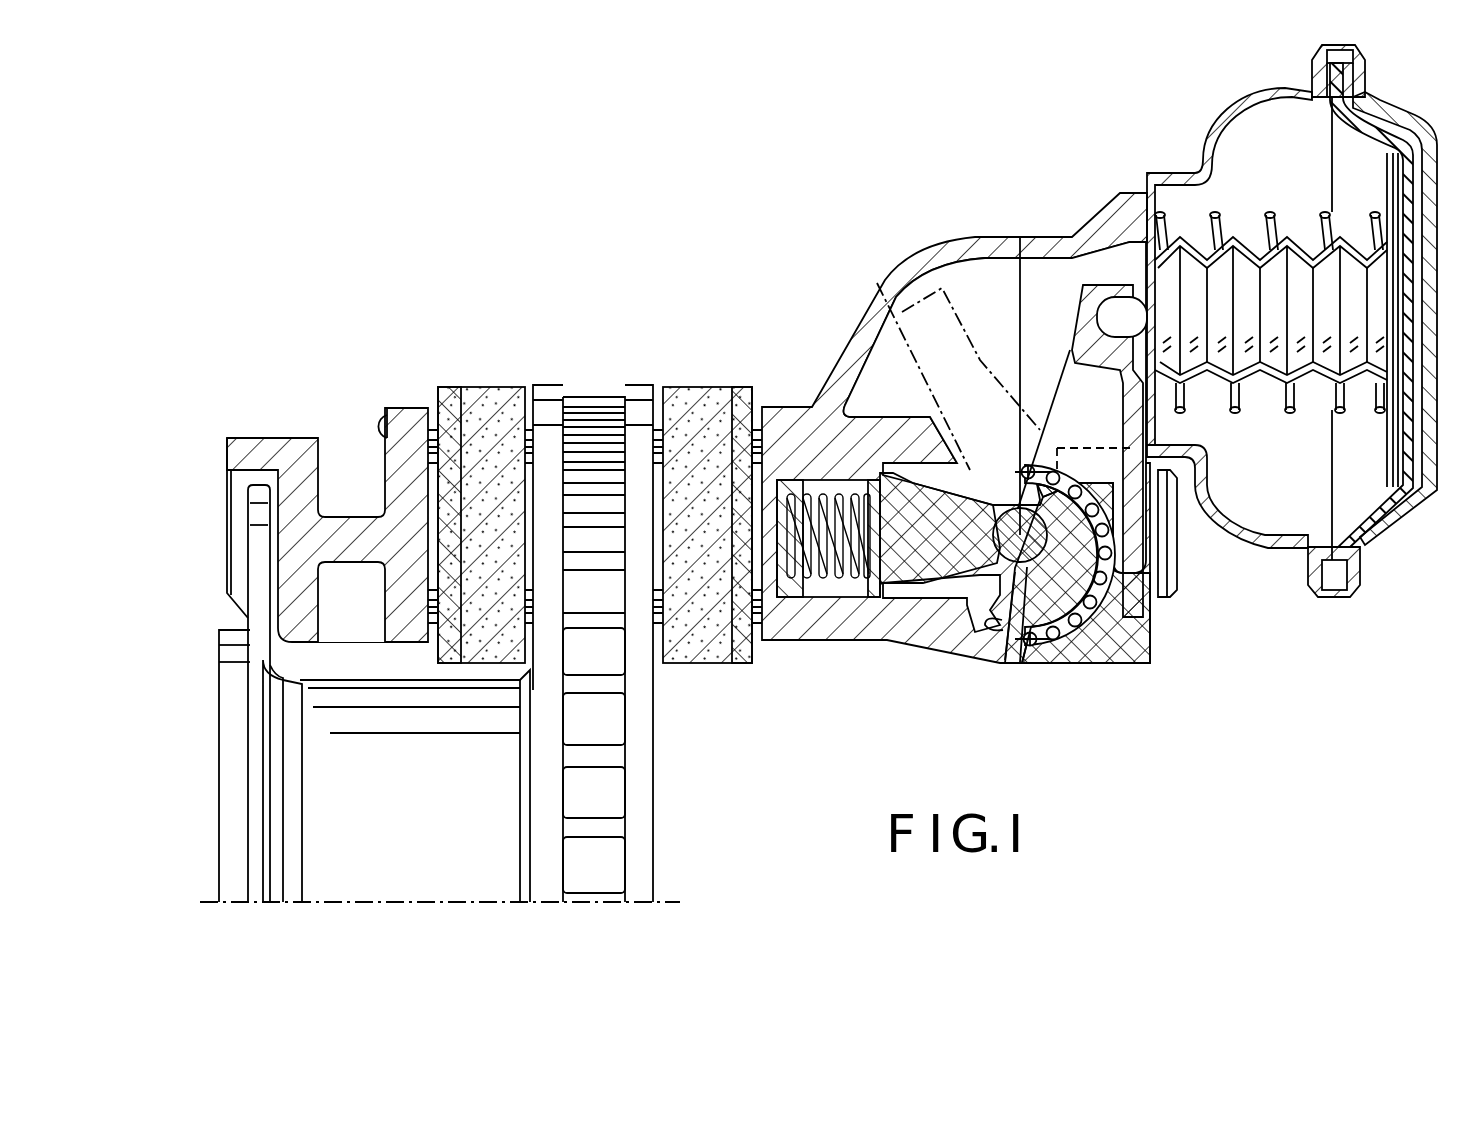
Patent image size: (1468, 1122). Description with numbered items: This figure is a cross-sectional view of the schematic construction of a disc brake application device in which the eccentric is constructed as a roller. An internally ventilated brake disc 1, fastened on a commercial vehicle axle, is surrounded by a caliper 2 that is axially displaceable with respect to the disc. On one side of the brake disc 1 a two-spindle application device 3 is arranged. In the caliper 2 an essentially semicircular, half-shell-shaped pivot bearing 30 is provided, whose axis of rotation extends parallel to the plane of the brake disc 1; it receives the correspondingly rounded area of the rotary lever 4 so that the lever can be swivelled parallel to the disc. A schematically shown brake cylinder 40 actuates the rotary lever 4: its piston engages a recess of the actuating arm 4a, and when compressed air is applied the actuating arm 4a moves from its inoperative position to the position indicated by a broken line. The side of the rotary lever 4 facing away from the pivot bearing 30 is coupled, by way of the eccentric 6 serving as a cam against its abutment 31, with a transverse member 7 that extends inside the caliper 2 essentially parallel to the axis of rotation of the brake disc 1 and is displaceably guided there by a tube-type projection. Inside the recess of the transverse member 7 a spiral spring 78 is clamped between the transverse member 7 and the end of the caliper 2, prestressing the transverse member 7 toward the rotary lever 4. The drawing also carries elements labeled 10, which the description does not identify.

The brake disc 1 is at (603, 388).
The caliper 2 is at (933, 262).
The two-spindle application device 3 is at (997, 305).
The rotary lever 4 is at (1045, 605).
The actuating arm 4a is at (882, 300).
The eccentric 6 is at (1012, 500).
The transverse member 7 is at (930, 557).
The magnet blocks 10 is at (487, 388).
The pivot bearing 30 is at (1090, 612).
The abutment 31 is at (1023, 573).
The brake cylinder 40 is at (1240, 172).
The spiral spring 78 is at (822, 580).